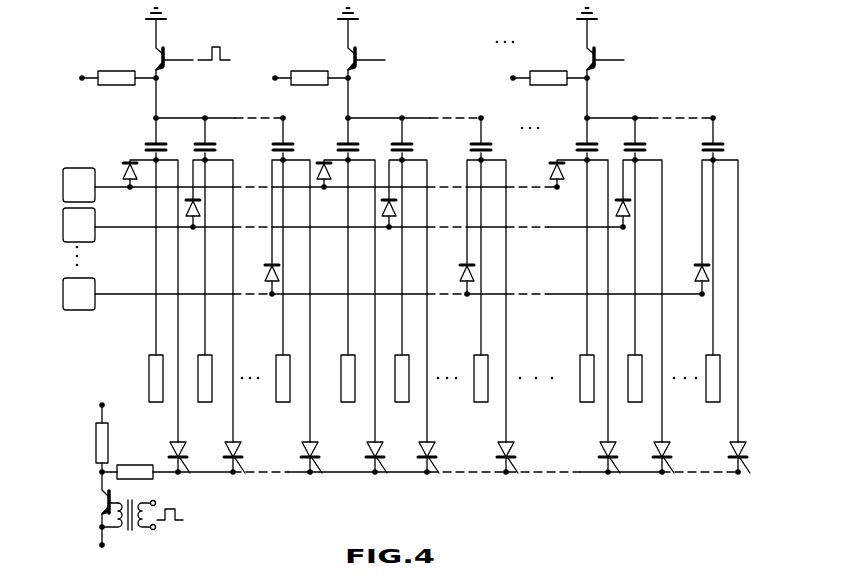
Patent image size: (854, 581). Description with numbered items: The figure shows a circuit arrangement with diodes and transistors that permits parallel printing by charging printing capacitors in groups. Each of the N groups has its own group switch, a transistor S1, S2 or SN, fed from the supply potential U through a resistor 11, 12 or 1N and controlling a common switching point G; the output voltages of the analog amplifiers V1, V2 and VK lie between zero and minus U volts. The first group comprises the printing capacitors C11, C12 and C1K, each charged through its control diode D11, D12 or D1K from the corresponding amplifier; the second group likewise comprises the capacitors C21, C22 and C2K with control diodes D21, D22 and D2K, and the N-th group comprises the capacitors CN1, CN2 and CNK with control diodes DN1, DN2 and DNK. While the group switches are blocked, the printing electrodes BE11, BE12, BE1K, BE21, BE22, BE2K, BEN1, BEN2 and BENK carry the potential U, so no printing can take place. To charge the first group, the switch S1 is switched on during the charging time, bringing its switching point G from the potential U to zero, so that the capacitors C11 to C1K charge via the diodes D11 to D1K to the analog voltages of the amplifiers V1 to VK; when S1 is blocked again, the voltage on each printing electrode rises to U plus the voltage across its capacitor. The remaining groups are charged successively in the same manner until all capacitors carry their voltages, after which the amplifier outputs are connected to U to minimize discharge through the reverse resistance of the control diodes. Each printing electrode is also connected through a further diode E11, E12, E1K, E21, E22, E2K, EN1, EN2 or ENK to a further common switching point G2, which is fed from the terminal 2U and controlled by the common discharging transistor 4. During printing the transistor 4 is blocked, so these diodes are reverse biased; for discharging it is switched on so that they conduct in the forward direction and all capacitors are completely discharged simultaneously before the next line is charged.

The resistor of first switching stage 11 is at (114, 72).
The resistor of second switching stage 12 is at (312, 72).
The resistor of N-th switching stage 1N is at (556, 72).
The group switch S1 is at (164, 52).
The group switch S2 is at (357, 54).
The group switch SN is at (596, 54).
The common switching point G is at (163, 113).
The voltage U is at (291, 313).
The analog amplifier V1 is at (79, 185).
The analog amplifier V2 is at (79, 225).
The analog amplifier VK is at (79, 295).
The printing capacitor C11 is at (152, 143).
The printing capacitor C12 is at (201, 143).
The printing capacitor C1K is at (279, 143).
The printing capacitor C21 is at (344, 143).
The printing capacitor C22 is at (398, 143).
The printing capacitor C2K is at (477, 143).
The printing capacitor CN1 is at (583, 143).
The printing capacitor CN2 is at (631, 143).
The printing capacitor CNK is at (709, 143).
The control diode D11 is at (124, 173).
The control diode D12 is at (201, 209).
The control diode D1K is at (270, 283).
The control diode D21 is at (329, 180).
The control diode D22 is at (397, 209).
The control diode D2K is at (465, 283).
The control diode DN1 is at (562, 180).
The control diode DN2 is at (631, 209).
The control diode DNK is at (700, 283).
The printing electrode BE11 is at (152, 392).
The printing electrode BE12 is at (201, 392).
The printing electrode BE1K is at (279, 392).
The printing electrode BE21 is at (344, 392).
The printing electrode BE22 is at (398, 392).
The printing electrode BE2K is at (477, 392).
The printing electrode BEN1 is at (583, 392).
The printing electrode BEN2 is at (631, 392).
The printing electrode BENK is at (709, 392).
The diode E11 is at (192, 473).
The diode E12 is at (247, 473).
The diode E1K is at (325, 473).
The diode E21 is at (389, 473).
The diode E22 is at (441, 473).
The diode E2K is at (520, 473).
The diode EN1 is at (622, 473).
The diode EN2 is at (676, 473).
The diode ENK is at (753, 473).
The double supply voltage terminal 2U is at (96, 401).
The further common switching point G2 is at (95, 466).
The discharging transistor 4 is at (104, 498).